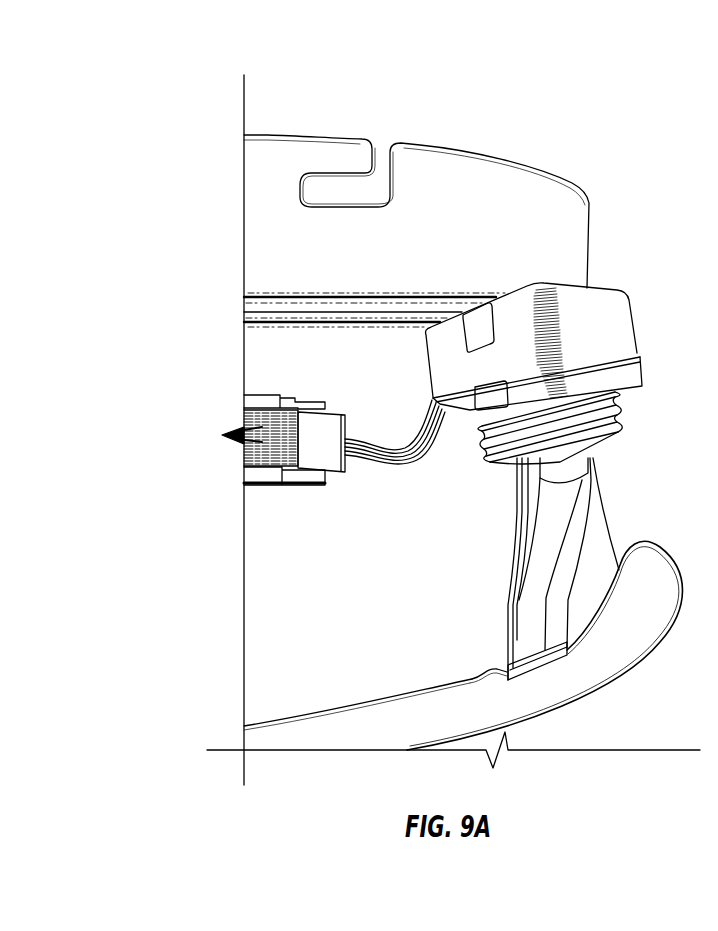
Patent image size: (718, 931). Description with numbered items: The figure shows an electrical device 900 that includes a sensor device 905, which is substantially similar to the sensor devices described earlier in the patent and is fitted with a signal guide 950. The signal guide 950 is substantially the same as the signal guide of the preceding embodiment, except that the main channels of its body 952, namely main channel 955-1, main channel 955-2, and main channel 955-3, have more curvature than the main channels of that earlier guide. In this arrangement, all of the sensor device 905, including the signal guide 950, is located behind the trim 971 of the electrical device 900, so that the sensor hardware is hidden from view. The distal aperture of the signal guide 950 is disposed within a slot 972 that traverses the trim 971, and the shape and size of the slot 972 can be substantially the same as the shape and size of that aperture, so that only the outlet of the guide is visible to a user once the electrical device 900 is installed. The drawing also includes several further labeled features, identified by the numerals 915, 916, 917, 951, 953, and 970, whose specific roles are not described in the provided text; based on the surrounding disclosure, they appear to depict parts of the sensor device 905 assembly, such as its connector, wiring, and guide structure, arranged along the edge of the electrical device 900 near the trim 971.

The electrical device 900 is at (537, 98).
The sensor device 905 is at (472, 259).
The connector box 915 is at (569, 282).
The wires 916 is at (392, 450).
The connector 917 is at (262, 394).
The signal guide 950 is at (527, 568).
The end clip 951 is at (494, 662).
The body 952 is at (506, 550).
The stem member 953 is at (506, 481).
The main channel 955-1 is at (520, 572).
The main channel 955-2 is at (517, 513).
The main channel 955-3 is at (577, 552).
The housing edge 970 is at (256, 224).
The trim 971 is at (270, 738).
The slot 972 is at (492, 688).